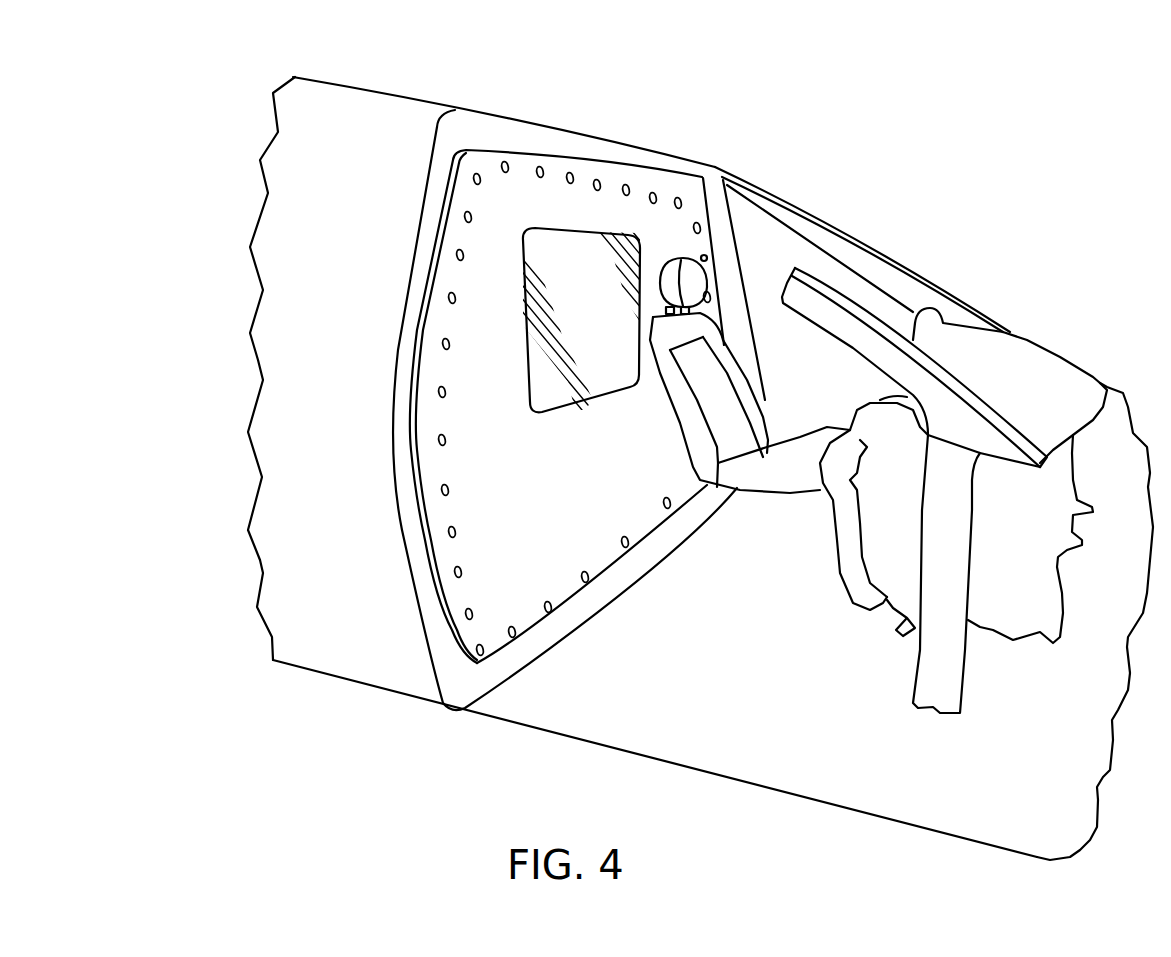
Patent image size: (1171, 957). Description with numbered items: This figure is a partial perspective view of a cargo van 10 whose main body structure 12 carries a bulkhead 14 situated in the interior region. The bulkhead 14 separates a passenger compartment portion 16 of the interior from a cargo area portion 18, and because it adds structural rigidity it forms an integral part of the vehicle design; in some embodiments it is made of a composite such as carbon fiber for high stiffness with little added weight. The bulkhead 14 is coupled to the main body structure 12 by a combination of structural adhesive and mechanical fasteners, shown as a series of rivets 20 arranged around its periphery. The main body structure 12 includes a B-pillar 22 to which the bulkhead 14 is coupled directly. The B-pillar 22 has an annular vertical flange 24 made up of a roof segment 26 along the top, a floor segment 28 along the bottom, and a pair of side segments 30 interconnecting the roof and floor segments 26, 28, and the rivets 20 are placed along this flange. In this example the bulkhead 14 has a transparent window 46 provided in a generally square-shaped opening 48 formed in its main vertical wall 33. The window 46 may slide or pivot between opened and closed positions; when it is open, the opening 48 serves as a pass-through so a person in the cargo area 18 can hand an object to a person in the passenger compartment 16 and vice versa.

The cargo van 10 is at (917, 143).
The main body structure 12 is at (917, 253).
The bulkhead 14 is at (536, 394).
The passenger compartment portion 16 is at (587, 720).
The cargo area portion 18 is at (247, 379).
The rivets 20 is at (465, 217).
The B-pillar 22 is at (447, 137).
The annular vertical flange 24 is at (380, 452).
The roof segment 26 is at (565, 137).
The floor segment 28 is at (677, 533).
The side segments 30 is at (732, 264).
The main vertical wall 33 is at (548, 243).
The transparent window 46 is at (607, 360).
The opening 48 is at (530, 352).